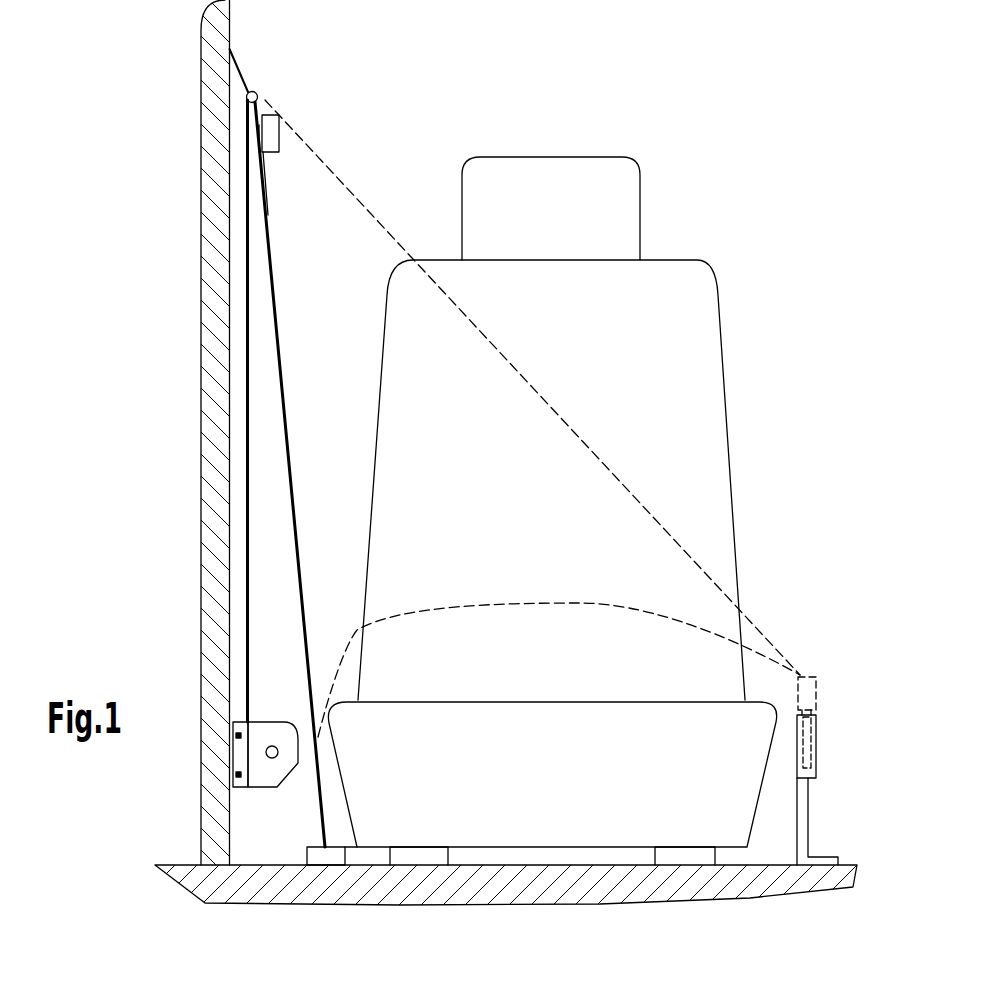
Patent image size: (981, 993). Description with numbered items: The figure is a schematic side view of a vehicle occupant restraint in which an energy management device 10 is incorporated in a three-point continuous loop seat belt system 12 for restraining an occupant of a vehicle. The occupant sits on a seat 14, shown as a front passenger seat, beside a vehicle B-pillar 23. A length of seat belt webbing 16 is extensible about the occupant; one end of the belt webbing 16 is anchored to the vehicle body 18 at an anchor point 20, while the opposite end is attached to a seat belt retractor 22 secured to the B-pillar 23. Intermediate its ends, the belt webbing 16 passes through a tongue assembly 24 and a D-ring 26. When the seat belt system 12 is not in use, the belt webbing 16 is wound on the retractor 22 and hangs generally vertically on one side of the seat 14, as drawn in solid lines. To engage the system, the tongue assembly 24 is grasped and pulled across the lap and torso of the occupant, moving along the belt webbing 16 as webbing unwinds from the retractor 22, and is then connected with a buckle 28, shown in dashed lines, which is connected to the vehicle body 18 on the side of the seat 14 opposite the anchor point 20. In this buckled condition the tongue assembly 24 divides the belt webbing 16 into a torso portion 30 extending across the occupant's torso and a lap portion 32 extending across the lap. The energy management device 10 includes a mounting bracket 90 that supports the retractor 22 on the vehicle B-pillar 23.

The energy management device 10 is at (230, 757).
The three-point continuous loop seat belt system 12 is at (703, 189).
The seat 14 is at (682, 283).
The seat belt webbing 16 is at (289, 447).
The vehicle body 18 is at (290, 893).
The anchor point 20 is at (335, 845).
The seat belt retractor 22 is at (280, 722).
The vehicle B-pillar 23 is at (201, 401).
The tongue assembly 24 is at (269, 130).
The D-ring 26 is at (231, 72).
The buckle 28 is at (817, 777).
The torso portion 30 is at (616, 472).
The lap portion 32 is at (580, 603).
The mounting bracket 90 is at (242, 790).